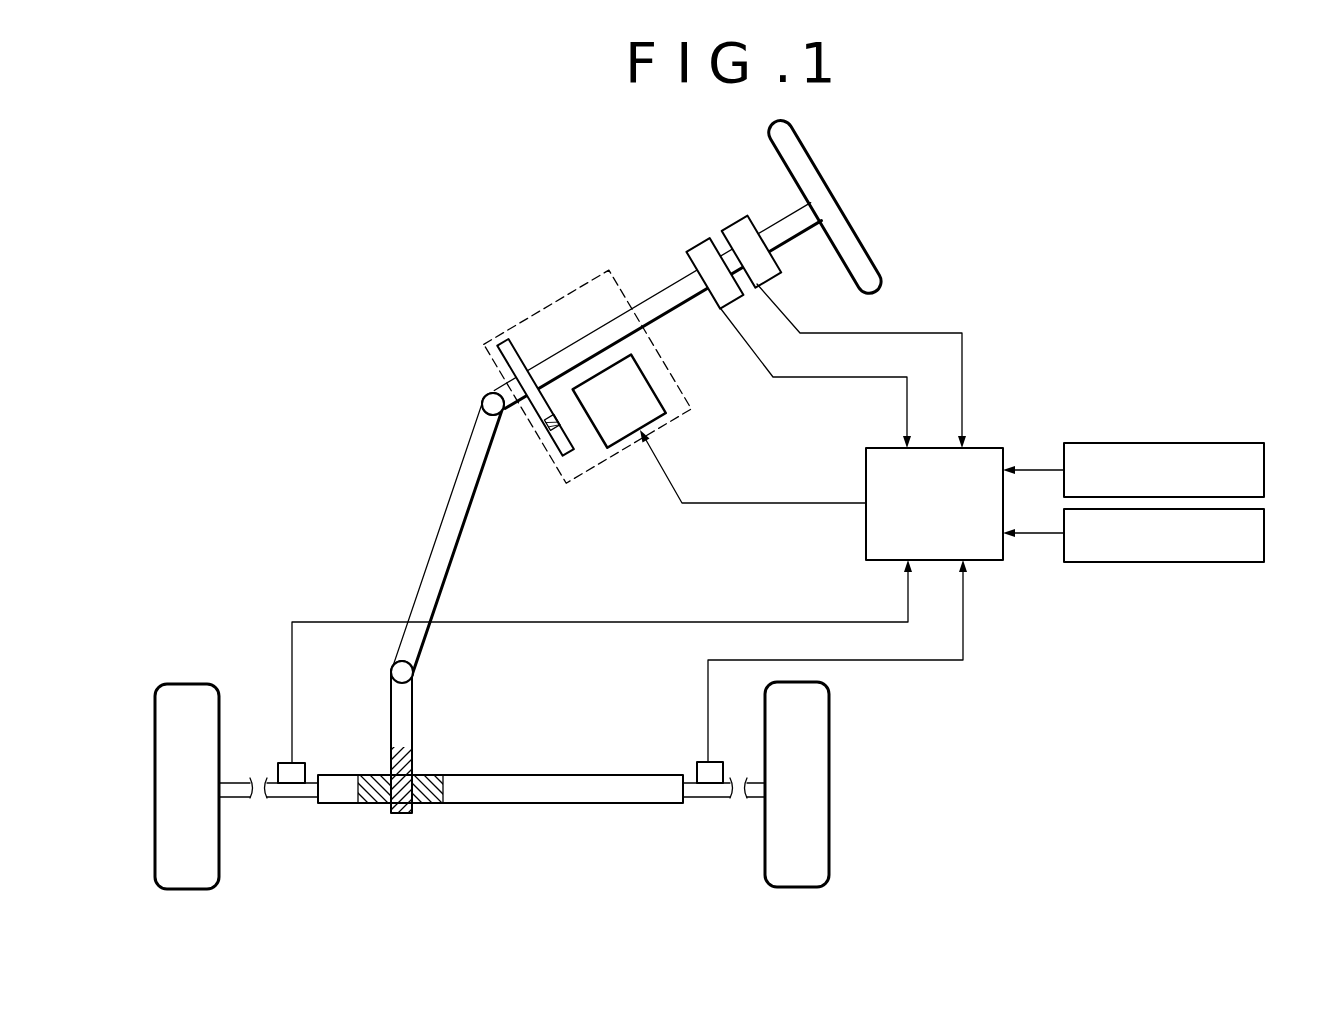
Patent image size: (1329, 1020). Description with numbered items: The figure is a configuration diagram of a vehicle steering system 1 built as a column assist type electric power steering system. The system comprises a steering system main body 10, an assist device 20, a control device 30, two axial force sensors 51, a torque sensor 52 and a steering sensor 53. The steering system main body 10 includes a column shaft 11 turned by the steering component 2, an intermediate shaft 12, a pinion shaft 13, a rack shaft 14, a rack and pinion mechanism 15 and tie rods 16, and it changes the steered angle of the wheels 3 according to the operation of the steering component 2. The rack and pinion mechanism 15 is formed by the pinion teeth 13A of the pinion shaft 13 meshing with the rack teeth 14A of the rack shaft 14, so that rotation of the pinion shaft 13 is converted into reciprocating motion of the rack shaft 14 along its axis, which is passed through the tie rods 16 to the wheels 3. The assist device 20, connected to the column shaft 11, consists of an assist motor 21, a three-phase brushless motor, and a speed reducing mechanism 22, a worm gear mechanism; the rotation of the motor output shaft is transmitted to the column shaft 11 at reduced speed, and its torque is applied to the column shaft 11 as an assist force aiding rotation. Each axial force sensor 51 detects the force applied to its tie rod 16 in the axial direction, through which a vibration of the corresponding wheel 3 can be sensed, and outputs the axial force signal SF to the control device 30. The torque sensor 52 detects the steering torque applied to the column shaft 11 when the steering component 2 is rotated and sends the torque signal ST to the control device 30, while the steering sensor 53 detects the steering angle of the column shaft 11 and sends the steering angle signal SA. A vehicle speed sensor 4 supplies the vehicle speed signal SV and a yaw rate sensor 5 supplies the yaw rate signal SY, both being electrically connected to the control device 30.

The vehicle steering system 1 is at (386, 206).
The steering component 2 is at (853, 225).
The wheels 3 is at (155, 786).
The vehicle speed sensor 4 is at (1264, 470).
The yaw rate sensor 5 is at (1264, 535).
The steering system main body 10 is at (443, 416).
The column shaft 11 is at (663, 292).
The intermediate shaft 12 is at (437, 533).
The pinion shaft 13 is at (413, 702).
The pinion teeth 13A is at (383, 797).
The rack shaft 14 is at (523, 806).
The rack teeth 14A is at (430, 818).
The rack and pinion mechanism 15 is at (410, 837).
The tie rods 16 is at (292, 800).
The assist device 20 is at (565, 293).
The assist motor 21 is at (663, 397).
The speed reducing mechanism 22 is at (530, 417).
The control device 30 is at (866, 538).
The axial force sensors 51 is at (283, 760).
The torque sensor 52 is at (697, 244).
The steering sensor 53 is at (733, 220).